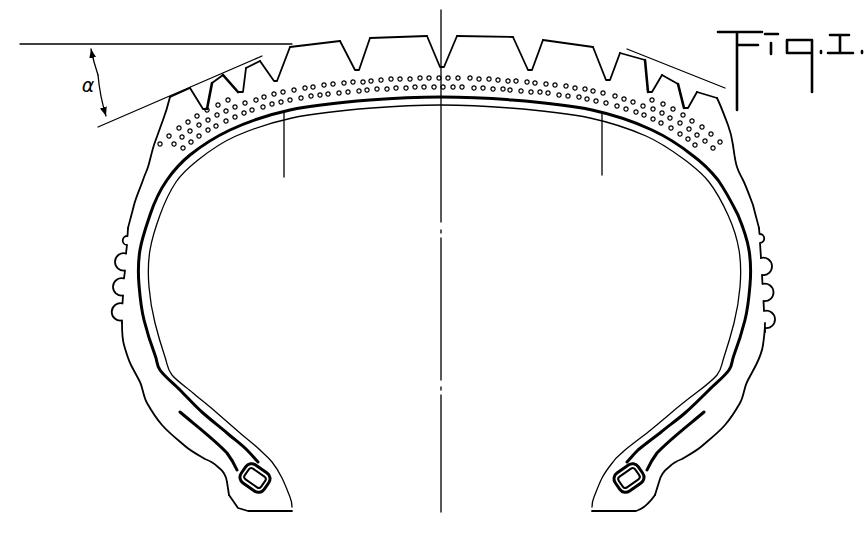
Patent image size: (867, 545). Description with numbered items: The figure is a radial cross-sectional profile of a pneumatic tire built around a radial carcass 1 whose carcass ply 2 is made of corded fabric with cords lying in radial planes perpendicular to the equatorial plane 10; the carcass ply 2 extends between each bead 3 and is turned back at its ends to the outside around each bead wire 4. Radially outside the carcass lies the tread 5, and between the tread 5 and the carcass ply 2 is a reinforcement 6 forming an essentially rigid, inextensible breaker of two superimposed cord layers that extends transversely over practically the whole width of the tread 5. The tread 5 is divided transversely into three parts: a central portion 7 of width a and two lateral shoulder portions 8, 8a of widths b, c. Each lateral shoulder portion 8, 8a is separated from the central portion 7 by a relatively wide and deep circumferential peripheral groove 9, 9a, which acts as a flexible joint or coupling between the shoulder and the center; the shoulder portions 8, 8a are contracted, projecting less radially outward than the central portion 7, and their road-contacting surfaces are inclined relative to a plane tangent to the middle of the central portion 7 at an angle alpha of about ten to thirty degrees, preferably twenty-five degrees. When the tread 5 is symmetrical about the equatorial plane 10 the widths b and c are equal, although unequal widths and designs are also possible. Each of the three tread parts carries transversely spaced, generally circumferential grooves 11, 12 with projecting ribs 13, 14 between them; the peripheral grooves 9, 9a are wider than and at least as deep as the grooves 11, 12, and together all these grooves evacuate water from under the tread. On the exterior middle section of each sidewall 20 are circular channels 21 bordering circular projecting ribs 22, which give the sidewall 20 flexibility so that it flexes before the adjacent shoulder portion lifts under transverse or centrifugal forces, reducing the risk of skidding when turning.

The radial carcass 1 is at (152, 270).
The carcass ply 2 is at (164, 357).
The bead 3 is at (238, 510).
The bead wire 4 is at (266, 476).
The tread 5 is at (451, 67).
The reinforcement 6 is at (300, 94).
The central portion 7 is at (470, 54).
The lateral shoulder portion 8 is at (222, 99).
The lateral shoulder portion 8a is at (682, 77).
The circumferential peripheral groove 9 is at (277, 57).
The circumferential peripheral groove 9a is at (610, 66).
The equatorial plane 10 is at (444, 325).
The grooves 11 is at (355, 48).
The grooves 12 is at (160, 122).
The projecting ribs 13 is at (304, 45).
The projecting ribs 14 is at (170, 97).
The sidewalls 20 is at (136, 378).
The circular channels 21 is at (118, 264).
The circular projecting ribs 22 is at (122, 251).
The width of the central portion a is at (601, 163).
The width of lateral shoulder portion b is at (253, 54).
The width of lateral shoulder portion c is at (718, 83).